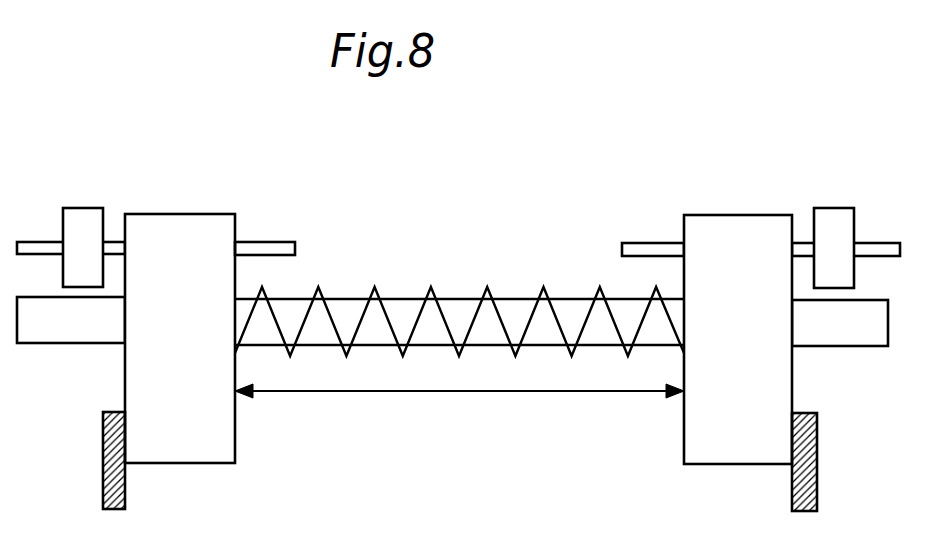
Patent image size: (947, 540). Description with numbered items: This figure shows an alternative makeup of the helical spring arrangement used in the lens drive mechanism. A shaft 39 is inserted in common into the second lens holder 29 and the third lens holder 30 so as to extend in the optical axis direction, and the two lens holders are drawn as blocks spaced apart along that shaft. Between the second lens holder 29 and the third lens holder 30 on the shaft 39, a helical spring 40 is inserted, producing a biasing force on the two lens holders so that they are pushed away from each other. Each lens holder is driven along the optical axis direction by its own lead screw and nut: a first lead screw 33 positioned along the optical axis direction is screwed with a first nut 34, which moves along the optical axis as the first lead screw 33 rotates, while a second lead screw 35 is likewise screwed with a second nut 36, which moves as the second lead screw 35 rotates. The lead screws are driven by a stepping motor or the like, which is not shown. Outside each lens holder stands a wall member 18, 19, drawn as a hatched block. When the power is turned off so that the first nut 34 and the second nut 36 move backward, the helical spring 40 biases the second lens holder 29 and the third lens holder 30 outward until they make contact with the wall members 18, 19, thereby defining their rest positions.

The wall member 18 is at (792, 488).
The wall member 19 is at (127, 490).
The second lens holder 29 is at (745, 215).
The third lens holder 30 is at (186, 214).
The first lead screw 33 is at (647, 242).
The first nut 34 is at (840, 208).
The second lead screw 35 is at (271, 242).
The second nut 36 is at (89, 207).
The shaft 39 is at (404, 298).
The helical spring 40 is at (490, 288).